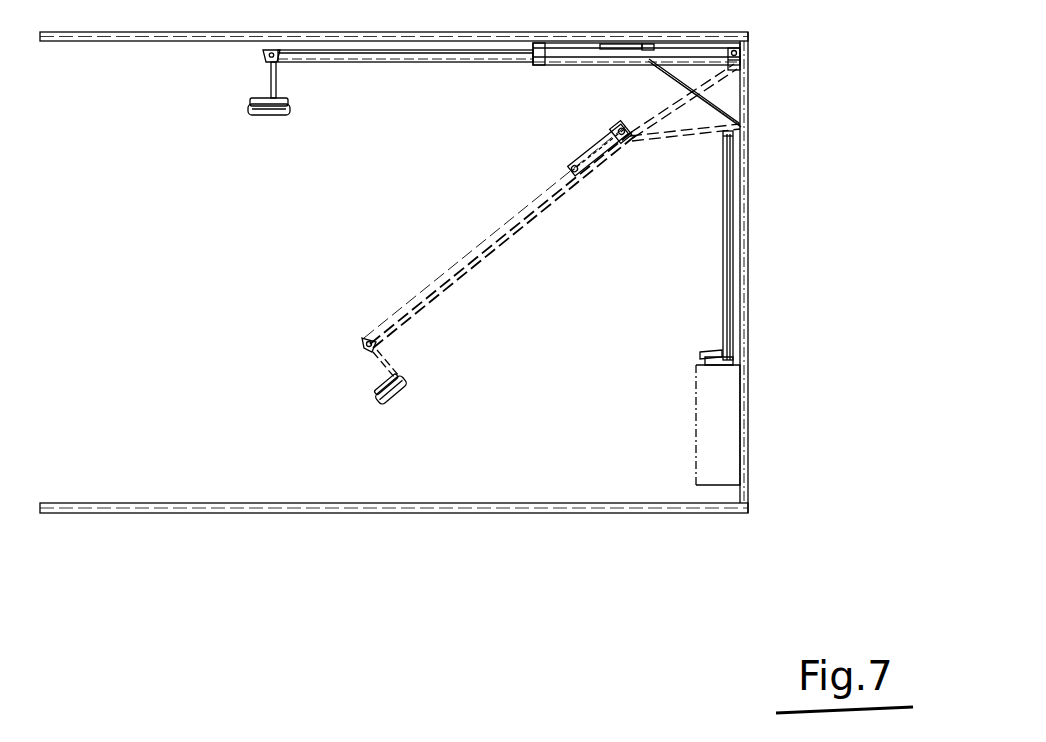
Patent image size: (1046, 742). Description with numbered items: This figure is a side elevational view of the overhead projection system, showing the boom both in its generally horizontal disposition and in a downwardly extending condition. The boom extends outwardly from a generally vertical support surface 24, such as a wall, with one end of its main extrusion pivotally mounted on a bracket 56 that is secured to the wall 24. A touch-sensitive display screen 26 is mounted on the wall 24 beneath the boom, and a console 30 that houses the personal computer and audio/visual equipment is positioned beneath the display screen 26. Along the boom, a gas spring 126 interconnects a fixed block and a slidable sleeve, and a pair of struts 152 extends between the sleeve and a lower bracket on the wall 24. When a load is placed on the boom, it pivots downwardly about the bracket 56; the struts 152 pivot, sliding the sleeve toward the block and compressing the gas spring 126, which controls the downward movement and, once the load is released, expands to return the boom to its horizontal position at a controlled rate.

The support surface 24 is at (745, 270).
The touch-sensitive display screen 26 is at (725, 223).
The console 30 is at (728, 412).
The bracket 56 is at (735, 62).
The gas spring 126 is at (600, 148).
The struts 152 is at (718, 108).